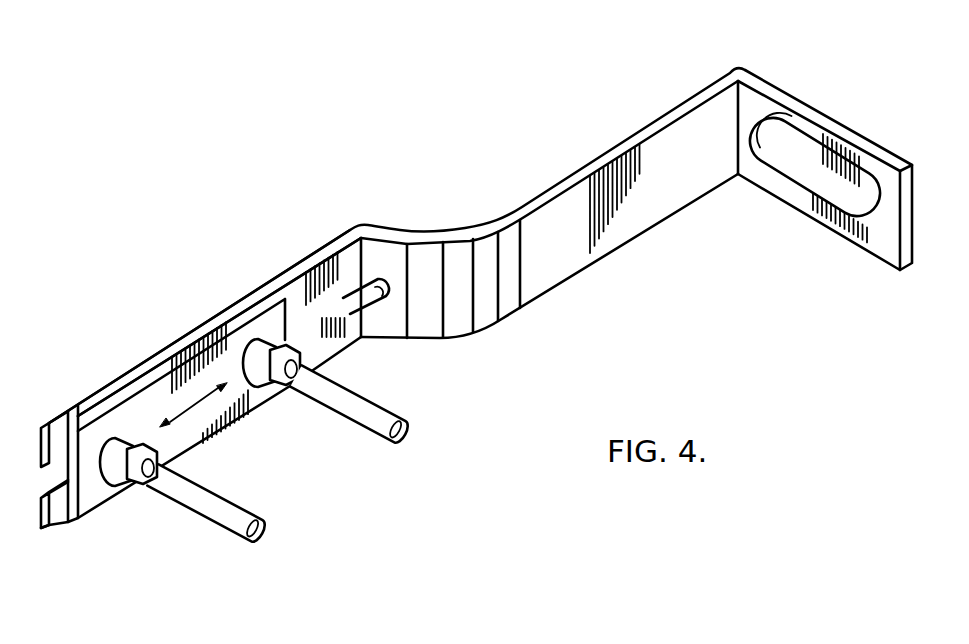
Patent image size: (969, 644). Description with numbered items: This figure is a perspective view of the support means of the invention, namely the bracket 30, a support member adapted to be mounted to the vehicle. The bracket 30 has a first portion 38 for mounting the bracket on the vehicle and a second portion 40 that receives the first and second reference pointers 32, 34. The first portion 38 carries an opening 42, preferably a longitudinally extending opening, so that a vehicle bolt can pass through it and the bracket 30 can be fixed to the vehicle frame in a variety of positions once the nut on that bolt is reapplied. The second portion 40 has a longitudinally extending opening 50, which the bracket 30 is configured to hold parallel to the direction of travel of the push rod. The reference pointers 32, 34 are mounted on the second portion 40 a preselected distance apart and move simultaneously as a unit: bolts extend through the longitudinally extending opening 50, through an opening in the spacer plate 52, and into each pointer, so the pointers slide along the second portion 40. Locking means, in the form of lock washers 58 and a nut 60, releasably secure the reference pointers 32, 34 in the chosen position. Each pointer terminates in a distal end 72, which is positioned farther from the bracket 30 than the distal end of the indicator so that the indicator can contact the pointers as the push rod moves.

The bracket 30 is at (455, 207).
The first reference pointer 32 is at (368, 410).
The second reference pointer 34 is at (232, 506).
The first portion 38 is at (757, 85).
The second portion 40 is at (200, 328).
The opening 42 is at (811, 166).
The longitudinally extending opening 50 is at (287, 322).
The plate 52 is at (143, 377).
The lock washers 58 is at (107, 412).
The nut 60 is at (117, 486).
The distal end 72 is at (393, 440).